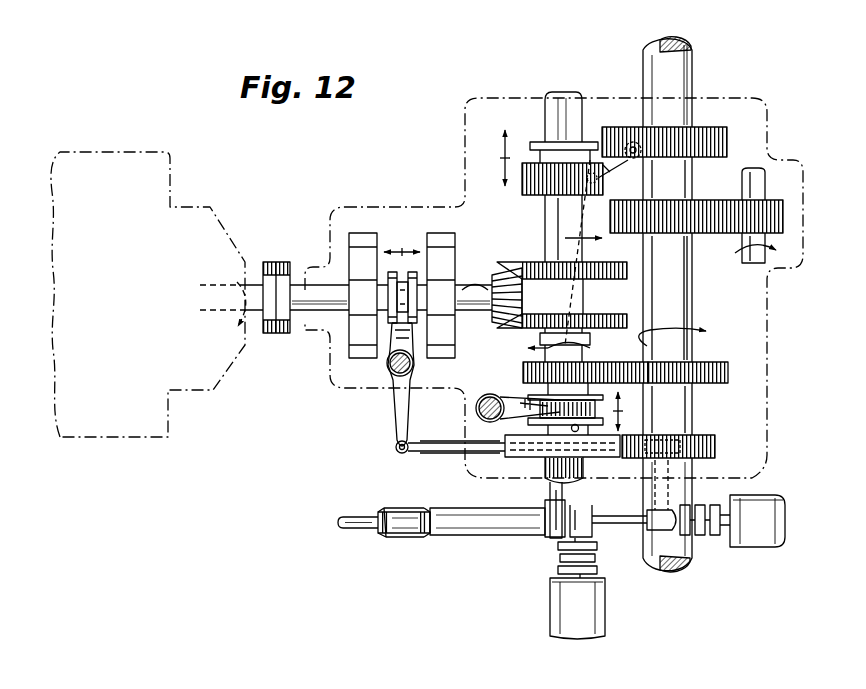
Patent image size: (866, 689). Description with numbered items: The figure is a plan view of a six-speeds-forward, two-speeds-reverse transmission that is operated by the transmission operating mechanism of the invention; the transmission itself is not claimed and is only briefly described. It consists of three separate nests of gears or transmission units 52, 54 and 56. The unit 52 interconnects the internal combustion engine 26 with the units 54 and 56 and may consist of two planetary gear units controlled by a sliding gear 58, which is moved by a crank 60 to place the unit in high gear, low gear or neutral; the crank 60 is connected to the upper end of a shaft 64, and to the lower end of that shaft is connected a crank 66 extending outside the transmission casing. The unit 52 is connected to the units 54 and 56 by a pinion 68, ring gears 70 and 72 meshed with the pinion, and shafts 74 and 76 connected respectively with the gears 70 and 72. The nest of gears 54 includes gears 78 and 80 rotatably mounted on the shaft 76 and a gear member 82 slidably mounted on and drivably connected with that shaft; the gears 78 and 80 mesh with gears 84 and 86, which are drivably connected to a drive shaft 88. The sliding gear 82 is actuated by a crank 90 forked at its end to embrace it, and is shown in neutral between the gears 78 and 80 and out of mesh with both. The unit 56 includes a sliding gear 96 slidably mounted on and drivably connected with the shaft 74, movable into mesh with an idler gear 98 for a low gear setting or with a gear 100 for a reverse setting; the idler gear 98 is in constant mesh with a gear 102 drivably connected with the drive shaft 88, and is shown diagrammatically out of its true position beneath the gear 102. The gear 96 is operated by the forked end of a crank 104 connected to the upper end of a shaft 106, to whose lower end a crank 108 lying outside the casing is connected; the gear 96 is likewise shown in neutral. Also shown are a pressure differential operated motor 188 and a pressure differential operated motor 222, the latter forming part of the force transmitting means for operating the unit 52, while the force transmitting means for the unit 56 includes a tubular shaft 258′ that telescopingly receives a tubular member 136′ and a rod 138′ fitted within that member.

The internal combustion engine 26 is at (66, 162).
The transmission unit 52 is at (397, 215).
The transmission unit 54 is at (609, 386).
The transmission unit 56 is at (722, 172).
The sliding gear 58 is at (393, 300).
The crank 60 is at (394, 340).
The shaft 64 is at (413, 364).
The crank 66 is at (397, 410).
The pinion 68 is at (476, 318).
The ring gear 70 is at (526, 262).
The ring gear 72 is at (528, 321).
The shaft 74 is at (546, 218).
The shaft 76 is at (578, 336).
The gear 78 is at (523, 372).
The gear 80 is at (516, 458).
The gear member 82 is at (590, 432).
The gear 84 is at (712, 362).
The gear 86 is at (716, 451).
The drive shaft 88 is at (686, 58).
The crank 90 is at (503, 416).
The sliding gear 96 is at (522, 190).
The idler gear 98 is at (786, 216).
The gear 100 is at (702, 126).
The gear 102 is at (700, 234).
The crank 104 is at (577, 155).
The shaft 106 is at (633, 130).
The crank 108 is at (608, 170).
The tubular member 136′ is at (403, 532).
The rod 138′ is at (355, 530).
The pressure differential operated motor 188 is at (600, 622).
The pressure differential operated motor 222 is at (765, 508).
The tubular shaft 258′ is at (478, 533).